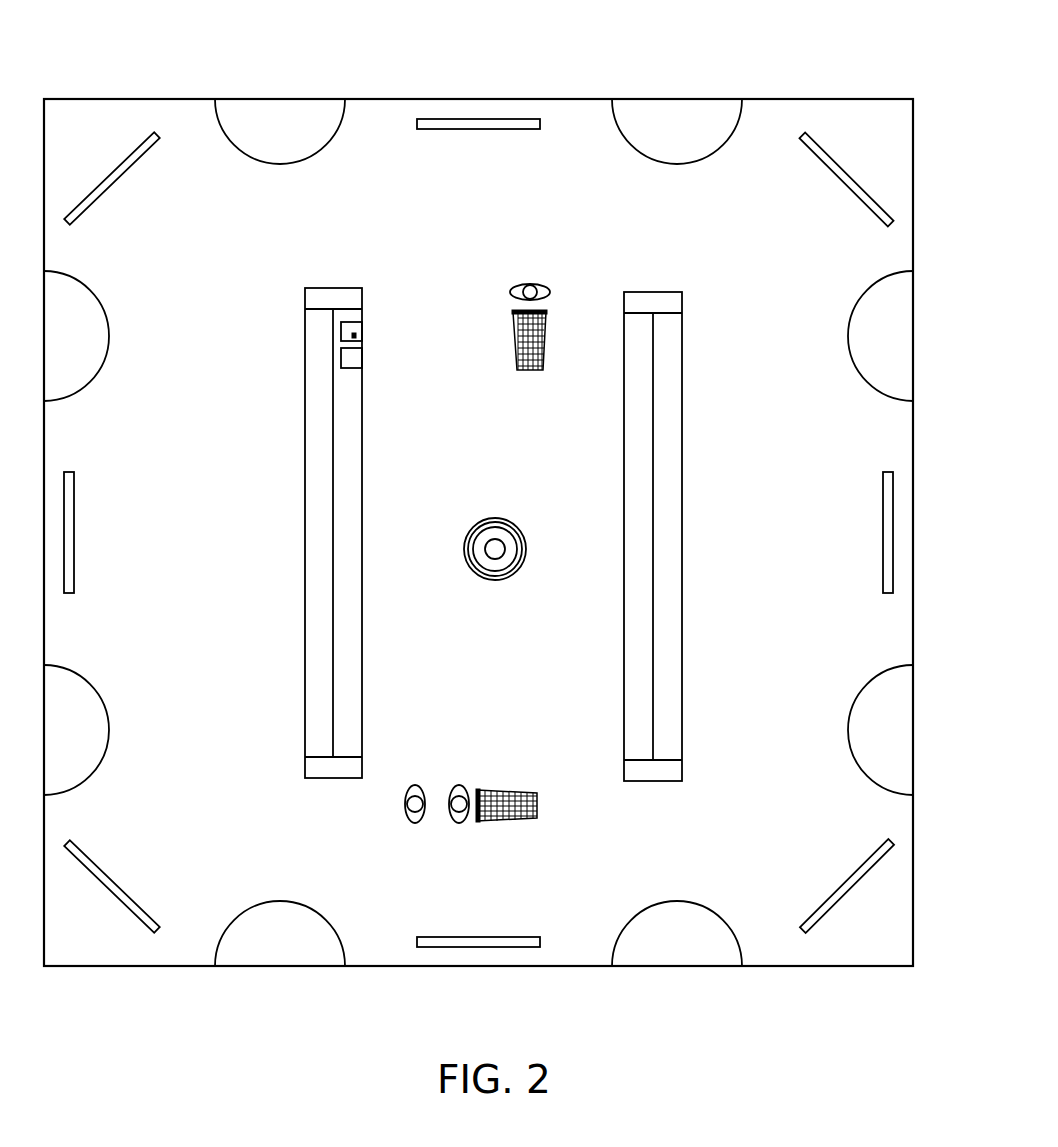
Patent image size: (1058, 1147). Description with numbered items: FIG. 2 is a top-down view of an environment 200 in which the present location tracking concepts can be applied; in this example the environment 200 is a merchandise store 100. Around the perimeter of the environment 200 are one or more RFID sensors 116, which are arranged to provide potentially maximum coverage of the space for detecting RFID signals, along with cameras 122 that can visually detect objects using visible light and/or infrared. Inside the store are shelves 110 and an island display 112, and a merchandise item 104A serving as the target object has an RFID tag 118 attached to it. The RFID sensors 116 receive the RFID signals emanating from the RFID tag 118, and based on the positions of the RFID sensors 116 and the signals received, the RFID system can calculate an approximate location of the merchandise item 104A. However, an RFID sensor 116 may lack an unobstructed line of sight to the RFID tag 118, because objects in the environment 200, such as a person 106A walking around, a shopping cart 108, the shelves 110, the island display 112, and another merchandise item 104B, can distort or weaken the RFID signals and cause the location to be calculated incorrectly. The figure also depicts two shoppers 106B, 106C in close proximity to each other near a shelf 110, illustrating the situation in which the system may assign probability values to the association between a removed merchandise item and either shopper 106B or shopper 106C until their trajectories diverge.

The merchandise store 100 is at (790, 952).
The merchandise item 104A is at (351, 331).
The other merchandise item 104B is at (352, 360).
The person 106A is at (531, 284).
The shopper 106B is at (415, 785).
The shopper 106C is at (462, 785).
The shopping cart 108 is at (530, 371).
The shelf 110 is at (682, 312).
The island display 112 is at (494, 518).
The RFID sensor 116 is at (833, 157).
The RFID tag 118 is at (356, 336).
The camera 122 is at (282, 116).
The environment 200 is at (386, 86).